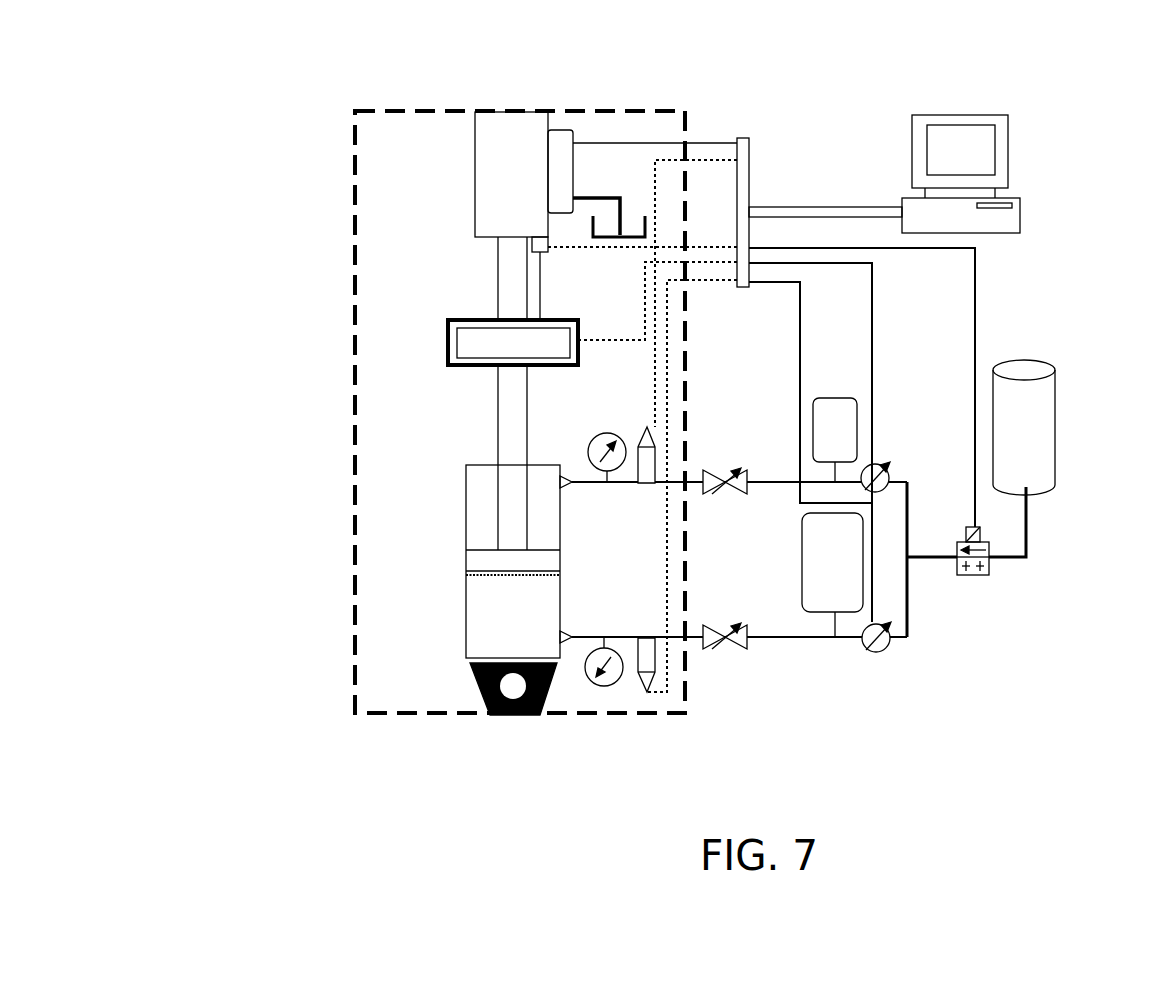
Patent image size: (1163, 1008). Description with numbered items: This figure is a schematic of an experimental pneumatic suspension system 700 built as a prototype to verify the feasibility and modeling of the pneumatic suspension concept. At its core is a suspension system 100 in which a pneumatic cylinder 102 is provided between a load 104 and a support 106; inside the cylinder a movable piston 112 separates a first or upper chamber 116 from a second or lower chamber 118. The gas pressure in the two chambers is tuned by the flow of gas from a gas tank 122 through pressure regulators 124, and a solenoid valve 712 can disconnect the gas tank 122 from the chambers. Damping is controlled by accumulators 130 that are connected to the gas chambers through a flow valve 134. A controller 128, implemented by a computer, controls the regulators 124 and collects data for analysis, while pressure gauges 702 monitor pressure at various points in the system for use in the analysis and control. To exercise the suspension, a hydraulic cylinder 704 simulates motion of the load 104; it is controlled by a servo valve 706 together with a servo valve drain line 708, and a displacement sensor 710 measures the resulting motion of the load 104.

The suspension system 100 is at (352, 409).
The pneumatic cylinder 102 is at (466, 505).
The load 104 is at (466, 343).
The support 106 is at (548, 697).
The movable piston 112 is at (492, 560).
The first/upper chamber 116 is at (492, 495).
The second/lower chamber 118 is at (495, 623).
The gas tank 122 is at (1045, 358).
The pressure regulators 124 is at (655, 447).
The controller 128 is at (1027, 185).
The accumulators 130 is at (857, 435).
The flow valve 134 is at (705, 492).
The experimental pneumatic suspension system 700 is at (1032, 709).
The pressure gauges 702 is at (613, 440).
The hydraulic cylinder 704 is at (475, 120).
The servo valve 706 is at (570, 128).
The servo valve drain line 708 is at (625, 217).
The displacement sensor 710 is at (573, 197).
The solenoid valve 712 is at (995, 568).